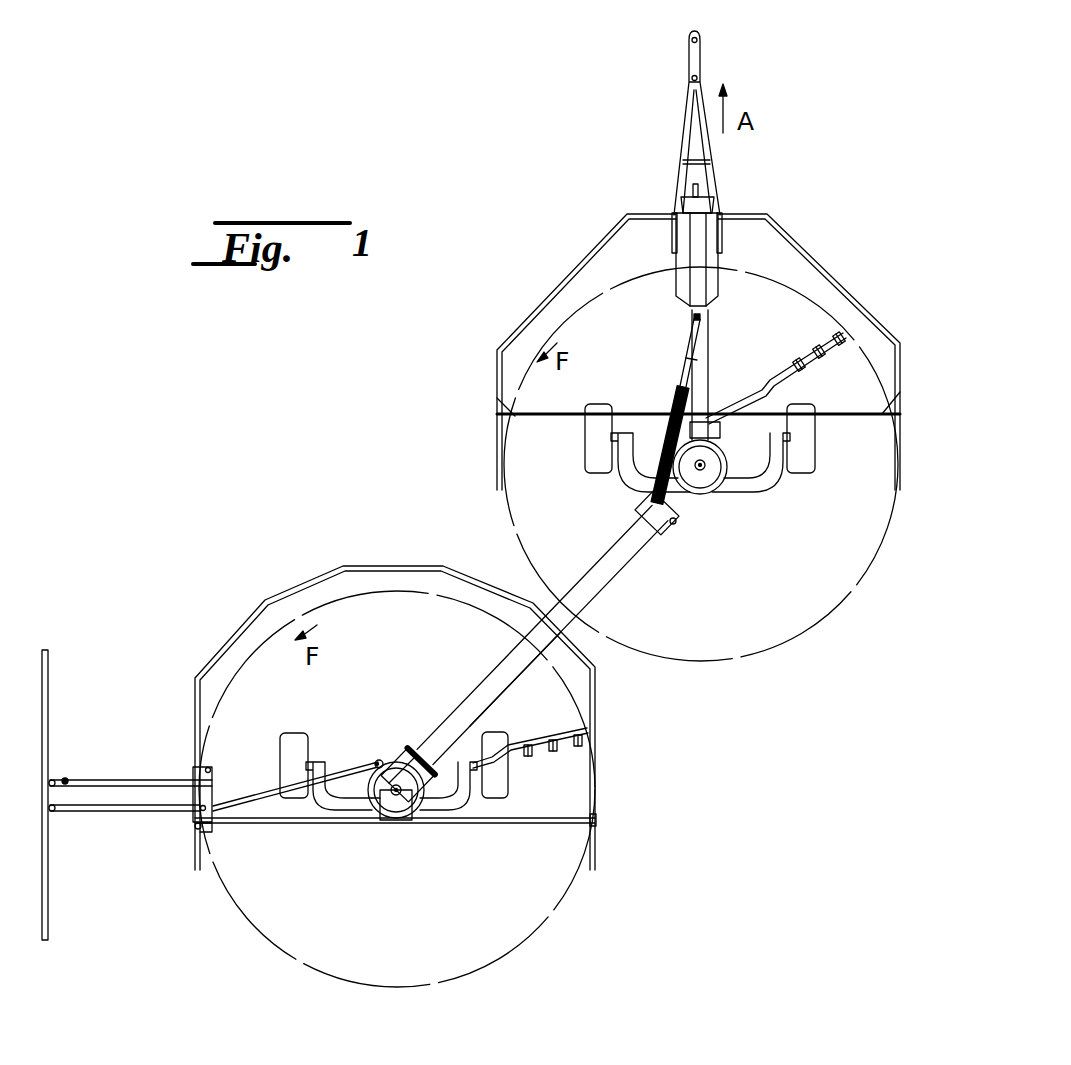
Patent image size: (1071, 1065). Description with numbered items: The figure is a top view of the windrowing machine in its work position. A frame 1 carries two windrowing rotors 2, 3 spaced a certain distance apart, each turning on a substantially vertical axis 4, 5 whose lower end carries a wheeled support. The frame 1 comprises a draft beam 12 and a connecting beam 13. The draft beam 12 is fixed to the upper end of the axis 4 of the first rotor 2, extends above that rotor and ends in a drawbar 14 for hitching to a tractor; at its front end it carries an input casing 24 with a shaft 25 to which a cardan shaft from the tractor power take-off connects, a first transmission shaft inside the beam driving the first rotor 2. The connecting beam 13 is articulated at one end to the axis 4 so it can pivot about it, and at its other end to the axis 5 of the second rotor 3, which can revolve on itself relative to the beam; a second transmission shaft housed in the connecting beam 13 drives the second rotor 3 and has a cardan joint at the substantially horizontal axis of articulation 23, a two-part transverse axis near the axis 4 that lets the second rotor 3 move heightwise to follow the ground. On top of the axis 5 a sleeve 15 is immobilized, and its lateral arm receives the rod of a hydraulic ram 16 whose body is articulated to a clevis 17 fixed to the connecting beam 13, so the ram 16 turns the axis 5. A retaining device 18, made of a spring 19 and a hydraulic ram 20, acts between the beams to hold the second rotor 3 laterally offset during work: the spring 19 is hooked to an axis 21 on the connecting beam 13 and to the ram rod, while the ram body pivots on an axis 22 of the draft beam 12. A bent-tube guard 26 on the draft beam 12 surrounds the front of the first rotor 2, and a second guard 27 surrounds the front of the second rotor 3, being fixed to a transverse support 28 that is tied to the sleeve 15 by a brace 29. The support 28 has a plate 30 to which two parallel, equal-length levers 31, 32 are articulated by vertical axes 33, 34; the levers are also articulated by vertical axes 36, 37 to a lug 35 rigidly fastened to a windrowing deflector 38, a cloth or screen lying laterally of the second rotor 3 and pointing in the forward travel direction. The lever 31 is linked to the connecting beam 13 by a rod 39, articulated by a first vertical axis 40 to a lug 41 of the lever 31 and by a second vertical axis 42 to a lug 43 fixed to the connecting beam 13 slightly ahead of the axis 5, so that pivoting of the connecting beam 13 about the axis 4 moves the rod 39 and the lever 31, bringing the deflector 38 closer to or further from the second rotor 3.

The frame 1 is at (602, 593).
The first windrowing rotor 2 is at (598, 288).
The second windrowing rotor 3 is at (247, 635).
The substantially vertical axis 4 is at (723, 487).
The substantially vertical axis 5 is at (388, 808).
The draft beam 12 is at (709, 340).
The connecting beam 13 is at (520, 663).
The drawbar 14 is at (687, 128).
The sleeve 15 is at (372, 810).
The hydraulic ram 16 is at (398, 757).
The clevis 17 is at (426, 757).
The retaining device 18 is at (646, 403).
The spring 19 is at (677, 440).
The hydraulic ram 20 is at (690, 357).
The axis 21 is at (650, 505).
The axis 22 is at (666, 316).
The axis of articulation 23 is at (677, 524).
The input casing 24 is at (702, 203).
The shaft 25 is at (695, 186).
The guard 26 is at (552, 292).
The second guard 27 is at (307, 585).
The transverse support 28 is at (230, 824).
The brace 29 is at (402, 818).
The plate 30 is at (212, 790).
The lever 31 is at (112, 812).
The lever 32 is at (133, 779).
The substantially vertical axis 33 is at (200, 812).
The substantially vertical axis 34 is at (204, 767).
The lug 35 is at (52, 779).
The substantially vertical axis 36 is at (53, 812).
The substantially vertical axis 37 is at (66, 778).
The windrowing deflector 38 is at (45, 650).
The rod 39 is at (337, 771).
The first substantially vertical axis 40 is at (204, 833).
The lug 41 is at (197, 829).
The second substantially vertical axis 42 is at (380, 760).
The lug 43 is at (375, 763).